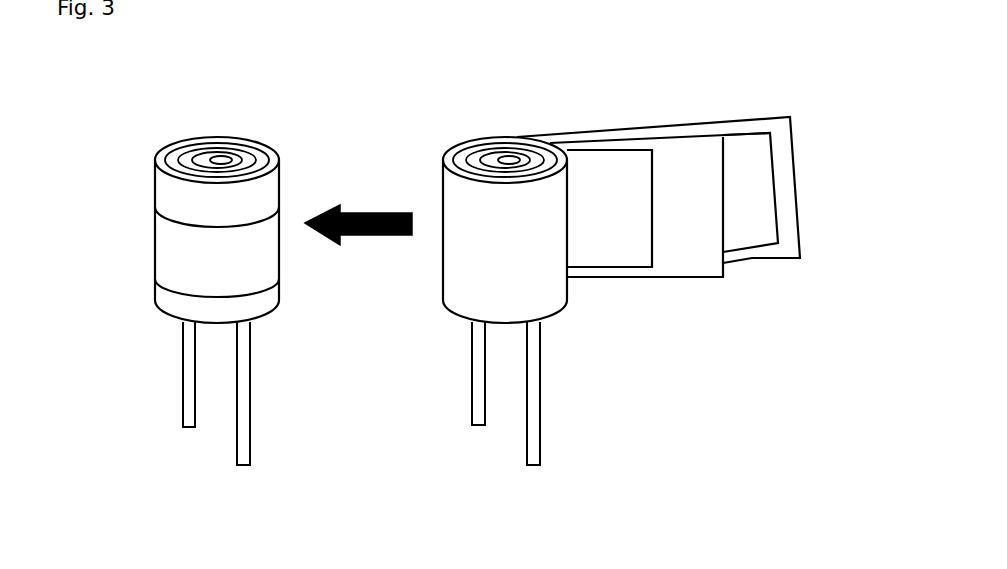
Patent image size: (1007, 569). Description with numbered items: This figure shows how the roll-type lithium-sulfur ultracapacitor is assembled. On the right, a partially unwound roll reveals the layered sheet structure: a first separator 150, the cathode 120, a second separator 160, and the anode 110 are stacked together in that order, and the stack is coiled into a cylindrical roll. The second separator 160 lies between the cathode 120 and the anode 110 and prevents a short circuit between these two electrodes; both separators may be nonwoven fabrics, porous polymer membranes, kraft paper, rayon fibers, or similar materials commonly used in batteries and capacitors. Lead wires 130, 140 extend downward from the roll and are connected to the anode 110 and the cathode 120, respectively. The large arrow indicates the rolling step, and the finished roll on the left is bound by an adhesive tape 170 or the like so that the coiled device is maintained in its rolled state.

The anode 110 is at (595, 250).
The cathode 120 is at (752, 147).
The lead wire 130 is at (187, 374).
The lead wire 140 is at (250, 422).
The first separator 150 is at (748, 255).
The second separator 160 is at (665, 265).
The adhesive tape 170 is at (253, 275).